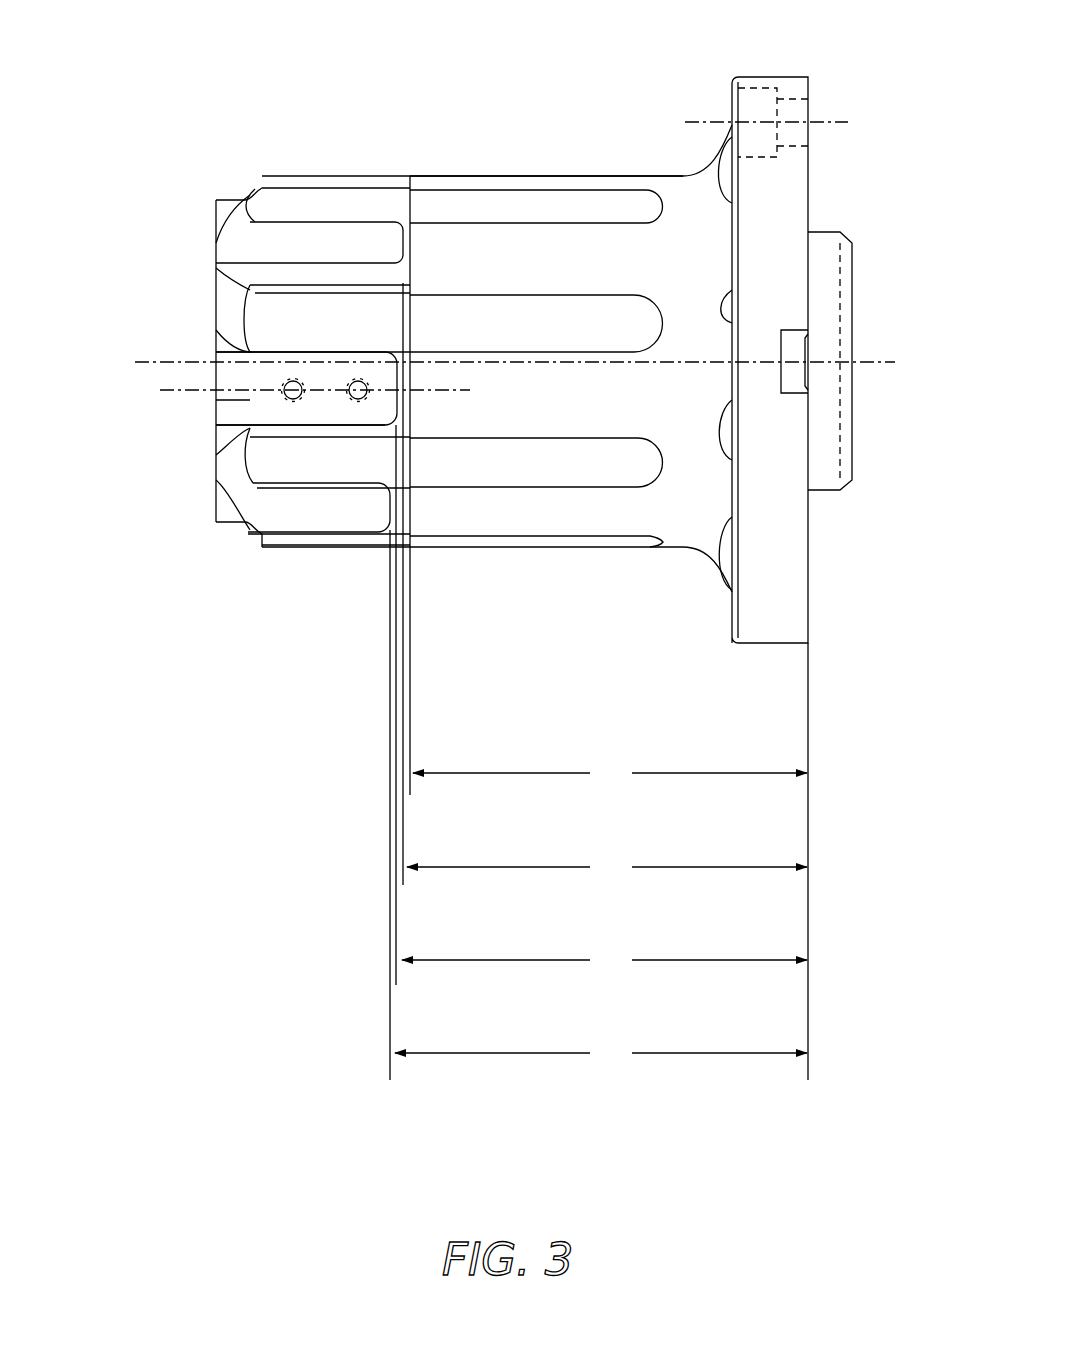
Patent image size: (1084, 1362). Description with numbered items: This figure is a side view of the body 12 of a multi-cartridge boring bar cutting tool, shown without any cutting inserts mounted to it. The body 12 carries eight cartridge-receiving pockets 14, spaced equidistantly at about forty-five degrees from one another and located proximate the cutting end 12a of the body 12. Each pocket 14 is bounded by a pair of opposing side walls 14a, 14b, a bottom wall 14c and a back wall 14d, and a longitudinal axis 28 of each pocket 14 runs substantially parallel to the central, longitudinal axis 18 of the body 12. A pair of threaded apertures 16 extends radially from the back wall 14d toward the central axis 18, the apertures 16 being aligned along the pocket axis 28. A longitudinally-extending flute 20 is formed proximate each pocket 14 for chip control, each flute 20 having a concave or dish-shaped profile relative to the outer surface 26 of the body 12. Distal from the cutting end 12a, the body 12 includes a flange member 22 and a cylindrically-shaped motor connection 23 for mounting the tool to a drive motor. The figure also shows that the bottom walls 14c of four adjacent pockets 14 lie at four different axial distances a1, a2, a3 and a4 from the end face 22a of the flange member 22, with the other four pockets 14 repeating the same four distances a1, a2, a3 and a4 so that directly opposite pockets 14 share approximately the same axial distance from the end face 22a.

The body 12 is at (190, 102).
The cutting end 12a is at (118, 368).
The cartridge-receiving pocket 14 is at (233, 378).
The side wall 14a is at (238, 417).
The side wall 14b is at (268, 352).
The bottom wall 14c is at (387, 366).
The back wall 14d is at (247, 397).
The threaded apertures 16 is at (357, 400).
The central, longitudinal axis 18 is at (880, 360).
The longitudinally-extending flute 20 is at (600, 208).
The flange member 22 is at (757, 100).
The end face 22a is at (812, 88).
The motor connection 23 is at (828, 232).
The outer surface 26 is at (512, 245).
The longitudinal axis 28 is at (449, 388).
The axial distance a1 is at (610, 774).
The axial distance a2 is at (607, 868).
The axial distance a3 is at (604, 961).
The axial distance a4 is at (601, 1054).